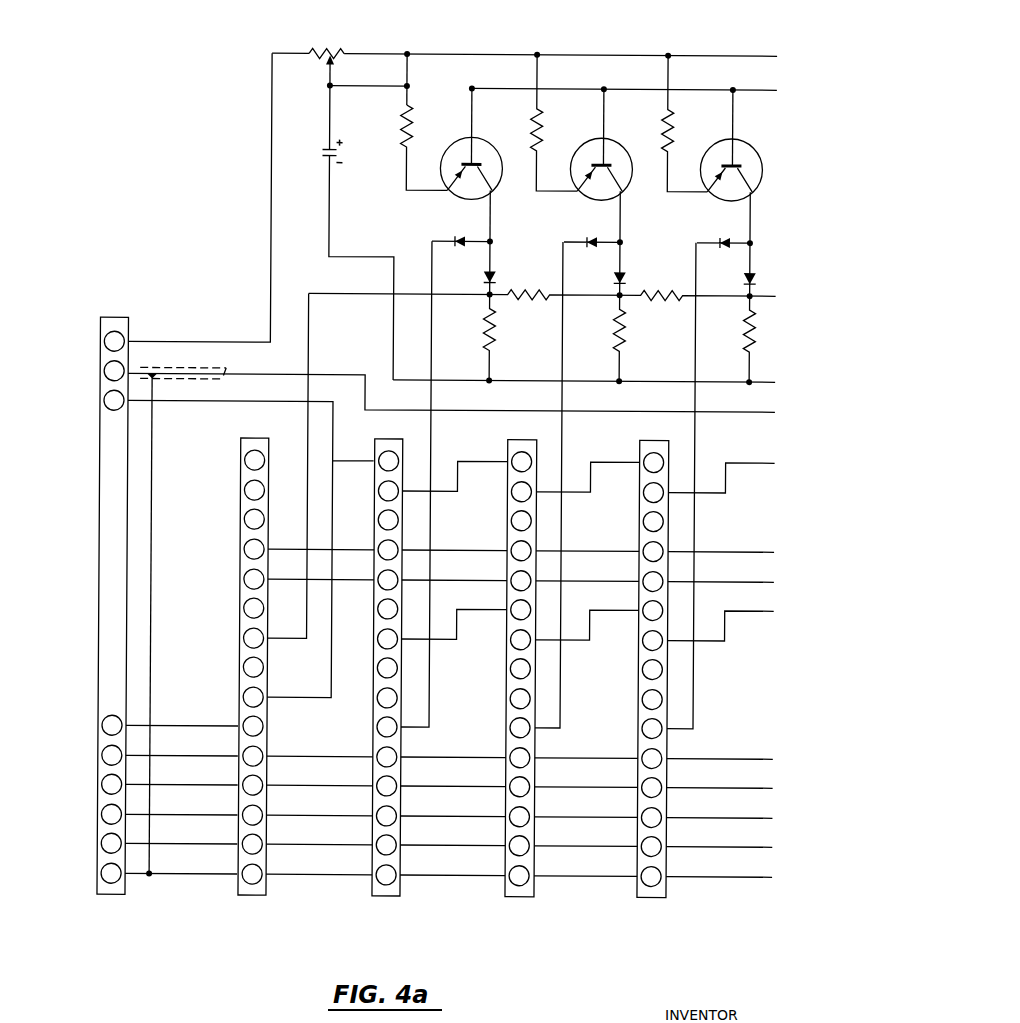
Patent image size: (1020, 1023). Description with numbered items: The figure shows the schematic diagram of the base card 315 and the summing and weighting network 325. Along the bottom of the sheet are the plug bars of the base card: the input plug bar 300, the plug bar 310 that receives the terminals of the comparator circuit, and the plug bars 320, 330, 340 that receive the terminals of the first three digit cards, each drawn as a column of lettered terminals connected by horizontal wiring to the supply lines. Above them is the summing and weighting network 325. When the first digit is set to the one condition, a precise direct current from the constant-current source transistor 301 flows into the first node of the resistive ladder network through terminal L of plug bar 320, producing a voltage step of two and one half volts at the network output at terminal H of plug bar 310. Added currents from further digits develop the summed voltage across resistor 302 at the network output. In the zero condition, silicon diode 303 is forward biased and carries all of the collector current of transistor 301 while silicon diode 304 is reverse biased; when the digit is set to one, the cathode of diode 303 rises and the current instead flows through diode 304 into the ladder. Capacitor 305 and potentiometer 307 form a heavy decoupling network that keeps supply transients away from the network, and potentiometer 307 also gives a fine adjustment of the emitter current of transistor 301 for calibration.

The input connector 300 is at (114, 897).
The plug bar 310 is at (251, 897).
The plug bar 320 is at (390, 897).
The plug bar 330 is at (523, 897).
The plug bar 340 is at (652, 897).
The constant-current source transistor 301 is at (452, 141).
The resistor 302 is at (495, 330).
The silicon diode 303 is at (456, 246).
The silicon diode 304 is at (494, 278).
The capacitor 305 is at (326, 149).
The potentiometer 307 is at (330, 53).
The base card 315 is at (445, 962).
The summing and weighting network 325 is at (558, 26).